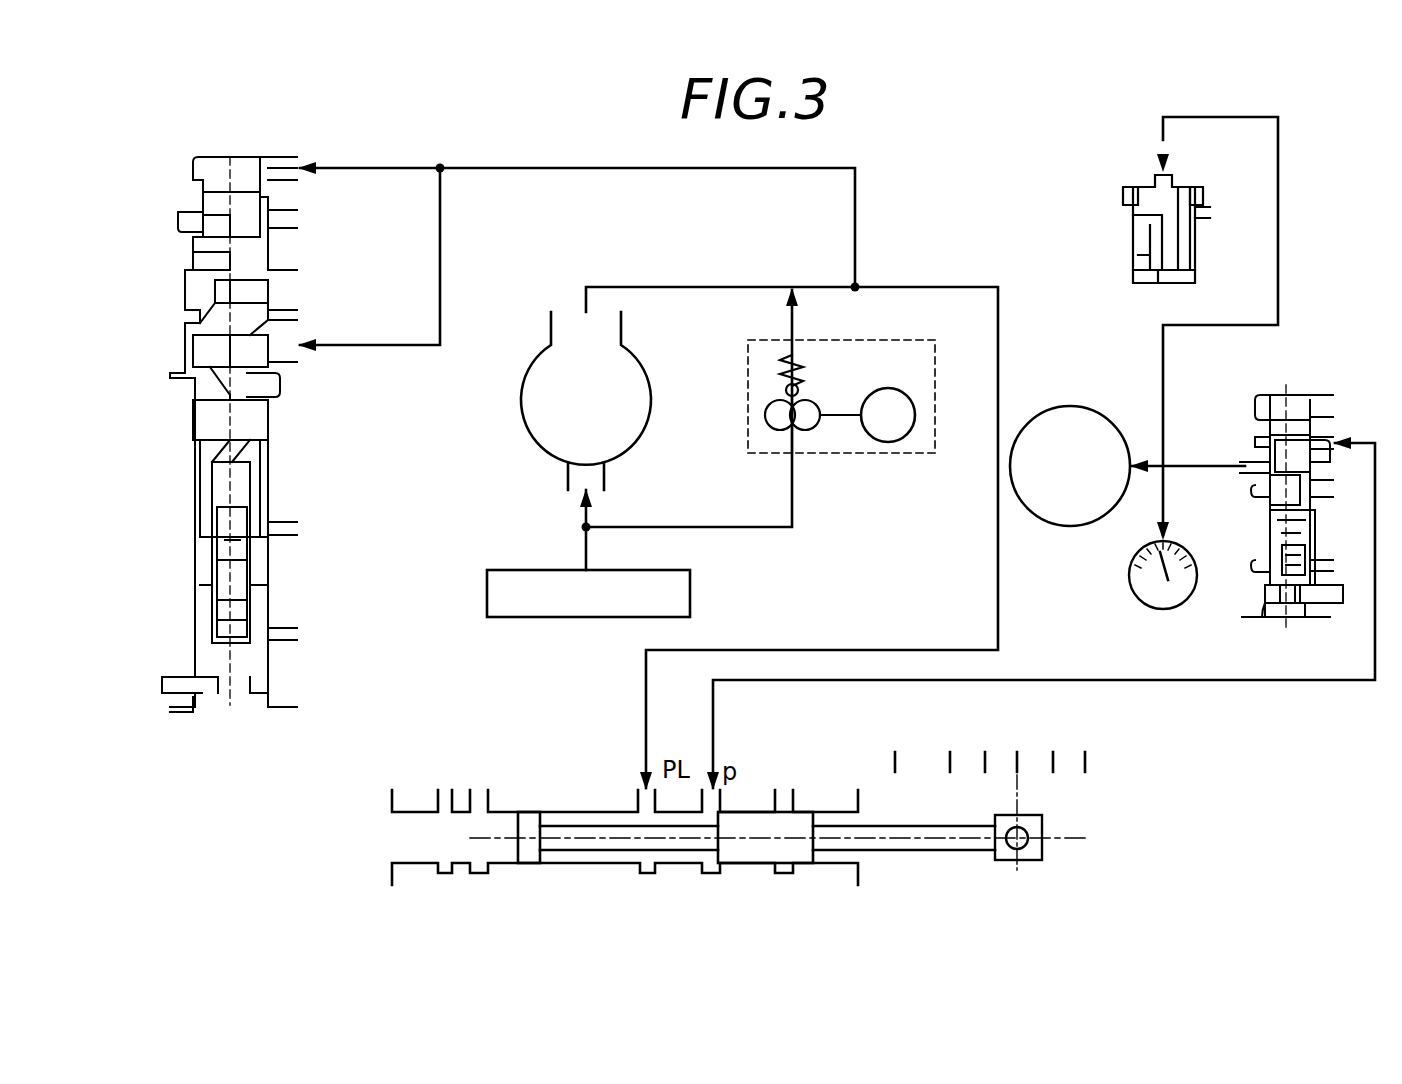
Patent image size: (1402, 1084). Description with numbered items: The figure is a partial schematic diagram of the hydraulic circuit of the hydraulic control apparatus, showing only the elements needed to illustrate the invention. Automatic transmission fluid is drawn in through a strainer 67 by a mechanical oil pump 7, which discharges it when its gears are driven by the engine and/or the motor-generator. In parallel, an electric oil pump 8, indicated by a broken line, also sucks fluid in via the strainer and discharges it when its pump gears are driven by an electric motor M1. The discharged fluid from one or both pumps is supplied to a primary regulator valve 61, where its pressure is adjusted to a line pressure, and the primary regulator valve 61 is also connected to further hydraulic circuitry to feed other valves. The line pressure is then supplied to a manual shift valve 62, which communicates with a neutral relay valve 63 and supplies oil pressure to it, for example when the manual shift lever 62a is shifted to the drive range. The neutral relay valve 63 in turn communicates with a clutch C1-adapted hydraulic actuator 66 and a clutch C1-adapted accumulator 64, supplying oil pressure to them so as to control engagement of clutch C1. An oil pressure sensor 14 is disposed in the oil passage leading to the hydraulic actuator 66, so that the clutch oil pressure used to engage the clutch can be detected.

The primary regulator valve 61 is at (193, 190).
The mechanical oil pump 7 is at (648, 368).
The electric oil pump 8 is at (920, 453).
The electric motor M1 is at (880, 442).
The strainer 67 is at (646, 572).
The clutch C1-adapted accumulator 64 is at (1133, 188).
The clutch C1-adapted hydraulic actuator 66 is at (1069, 408).
The oil pressure sensor 14 is at (1163, 608).
The neutral relay valve 63 is at (1262, 430).
The manual shift valve 62 is at (925, 863).
The manual shift lever 62a is at (1042, 855).